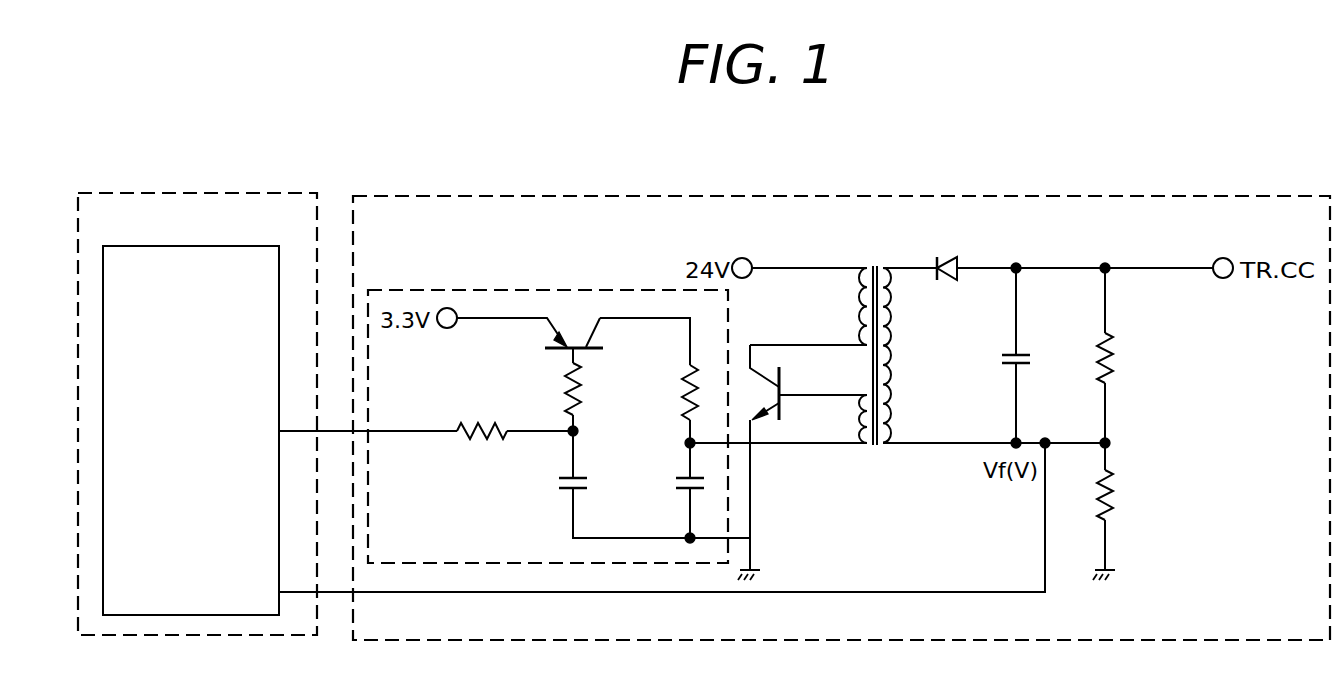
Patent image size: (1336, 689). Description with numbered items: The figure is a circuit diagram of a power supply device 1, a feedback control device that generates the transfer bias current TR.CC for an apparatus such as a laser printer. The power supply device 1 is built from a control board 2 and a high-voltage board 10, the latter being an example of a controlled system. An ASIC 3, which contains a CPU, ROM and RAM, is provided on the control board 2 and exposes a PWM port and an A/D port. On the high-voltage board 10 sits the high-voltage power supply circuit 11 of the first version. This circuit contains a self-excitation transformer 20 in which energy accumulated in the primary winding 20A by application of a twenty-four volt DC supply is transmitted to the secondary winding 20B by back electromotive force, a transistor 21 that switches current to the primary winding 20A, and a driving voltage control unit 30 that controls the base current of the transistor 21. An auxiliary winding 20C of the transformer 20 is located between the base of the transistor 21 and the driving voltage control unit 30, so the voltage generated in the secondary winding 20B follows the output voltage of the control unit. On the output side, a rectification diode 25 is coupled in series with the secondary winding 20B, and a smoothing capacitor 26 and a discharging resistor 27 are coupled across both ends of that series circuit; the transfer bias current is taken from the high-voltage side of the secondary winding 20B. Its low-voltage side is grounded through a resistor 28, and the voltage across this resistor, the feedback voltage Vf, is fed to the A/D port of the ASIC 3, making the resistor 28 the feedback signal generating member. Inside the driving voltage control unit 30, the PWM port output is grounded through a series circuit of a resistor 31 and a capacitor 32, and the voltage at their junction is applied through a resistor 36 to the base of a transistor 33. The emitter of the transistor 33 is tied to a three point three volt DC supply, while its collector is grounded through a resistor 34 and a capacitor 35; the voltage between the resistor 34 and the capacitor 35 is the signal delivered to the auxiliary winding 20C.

The power supply device 1 is at (992, 181).
The control board 2 is at (224, 192).
The ASIC 3 is at (198, 246).
The high-voltage board 10 is at (1095, 195).
The high-voltage power supply circuit 11 is at (1159, 373).
The self-excitation transformer 20 is at (883, 367).
The primary winding 20A is at (854, 312).
The secondary winding 20B is at (899, 351).
The auxiliary winding 20C is at (860, 446).
The transistor 21 is at (770, 419).
The rectification diode 25 is at (948, 262).
The smoothing capacitor 26 is at (1025, 352).
The discharging resistor 27 is at (1110, 332).
The resistor 28 is at (1110, 468).
The driving voltage control unit 30 is at (493, 290).
The resistor 31 is at (463, 432).
The capacitor 32 is at (582, 477).
The transistor 33 is at (554, 354).
The resistor 34 is at (690, 372).
The capacitor 35 is at (680, 492).
The resistor 36 is at (583, 380).